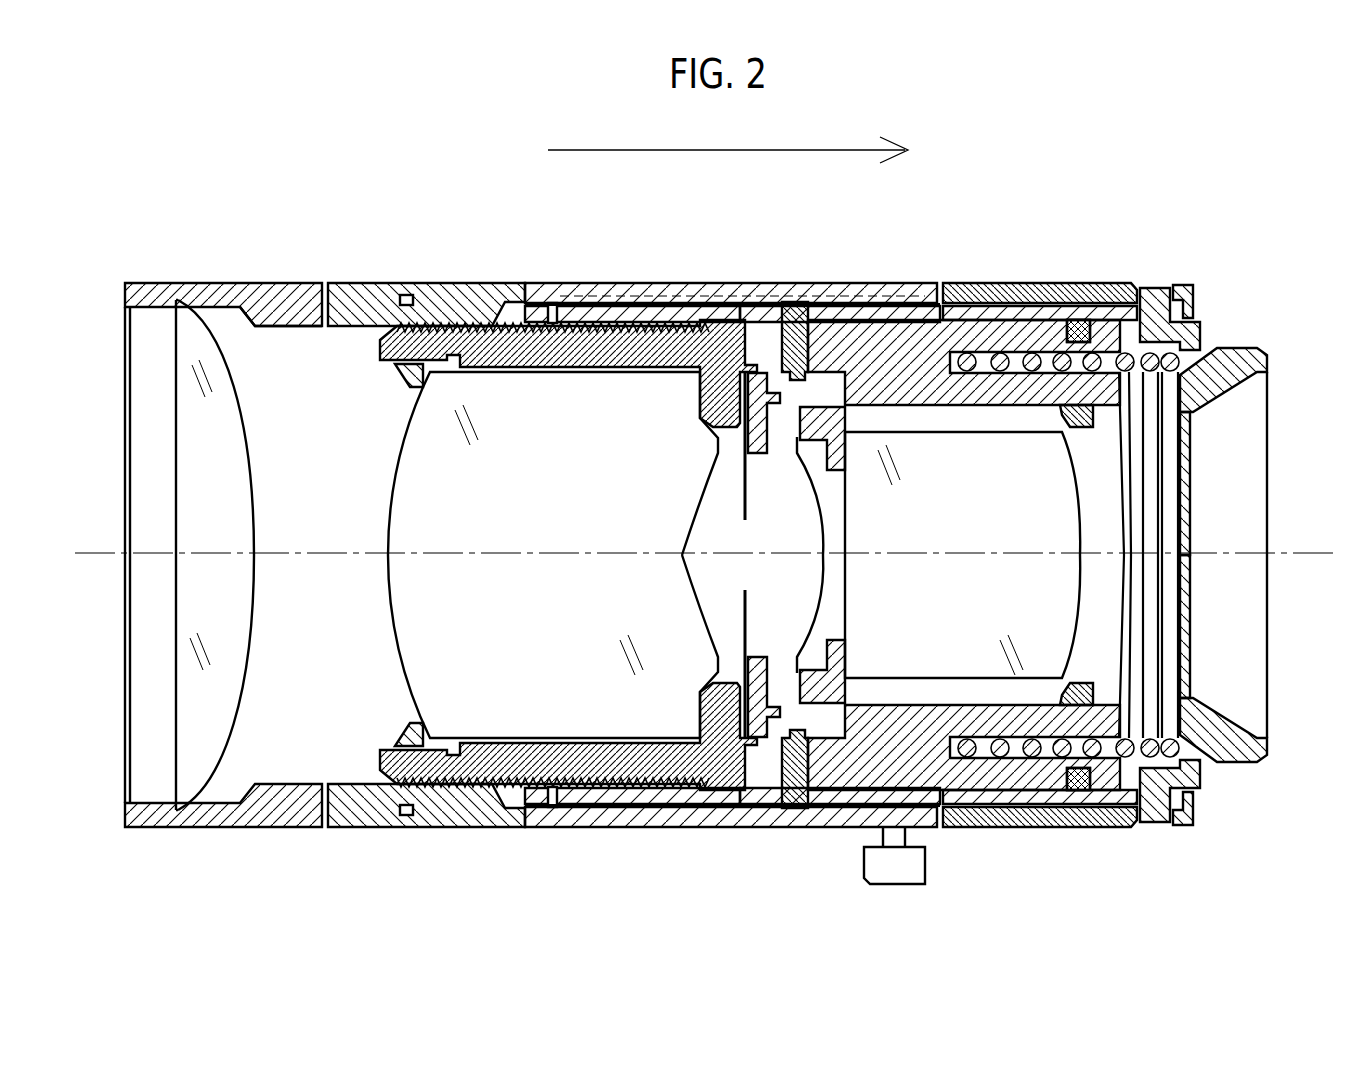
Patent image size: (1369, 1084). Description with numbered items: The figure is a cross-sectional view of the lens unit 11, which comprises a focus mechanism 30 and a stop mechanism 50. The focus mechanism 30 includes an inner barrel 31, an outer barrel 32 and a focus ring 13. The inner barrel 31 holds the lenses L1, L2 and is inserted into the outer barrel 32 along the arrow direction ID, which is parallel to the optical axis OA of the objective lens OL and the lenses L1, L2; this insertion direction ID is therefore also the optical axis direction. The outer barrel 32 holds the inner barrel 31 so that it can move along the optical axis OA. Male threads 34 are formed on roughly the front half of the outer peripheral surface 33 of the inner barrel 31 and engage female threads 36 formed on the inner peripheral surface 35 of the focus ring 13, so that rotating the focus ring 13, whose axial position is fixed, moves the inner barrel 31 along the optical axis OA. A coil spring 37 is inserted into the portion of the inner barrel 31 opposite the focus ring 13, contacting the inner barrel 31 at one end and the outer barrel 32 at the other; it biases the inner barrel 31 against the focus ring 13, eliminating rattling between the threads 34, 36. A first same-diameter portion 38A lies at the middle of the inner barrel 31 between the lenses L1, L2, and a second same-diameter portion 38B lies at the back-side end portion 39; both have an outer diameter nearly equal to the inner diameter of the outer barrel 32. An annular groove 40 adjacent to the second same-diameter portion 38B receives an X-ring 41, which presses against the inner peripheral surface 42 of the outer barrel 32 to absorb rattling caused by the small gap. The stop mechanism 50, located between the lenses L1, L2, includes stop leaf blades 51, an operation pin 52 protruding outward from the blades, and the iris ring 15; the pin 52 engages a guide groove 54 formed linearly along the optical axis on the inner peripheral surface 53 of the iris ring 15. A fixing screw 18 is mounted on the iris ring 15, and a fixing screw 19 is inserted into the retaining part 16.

The lens unit 11 is at (728, 552).
The focus ring 13 is at (228, 592).
The iris ring 15 is at (645, 303).
The retaining part 16 is at (1047, 283).
The fixing screw 18 is at (893, 884).
The fixing screw 19 is at (1143, 288).
The focus mechanism 30 is at (618, 594).
The inner barrel 31 is at (693, 773).
The outer barrel 32 is at (622, 800).
The outer peripheral surface 33 is at (923, 305).
The male threads 34 is at (518, 318).
The inner peripheral surface 35 is at (305, 328).
The female threads 36 is at (432, 300).
The coil spring 37 is at (1168, 478).
The first same-diameter portion 38A is at (760, 827).
The second same-diameter portion 38B is at (1127, 822).
The end portion 39 is at (1177, 802).
The annular groove 40 is at (1100, 302).
The X-ring 41 is at (1085, 795).
The inner peripheral surface 42 is at (993, 805).
The stop mechanism 50 is at (732, 489).
The stop leaf blades 51 is at (740, 335).
The operation pin 52 is at (795, 300).
The inner peripheral surface 53 is at (870, 305).
The guide groove 54 is at (580, 300).
The lens L1 is at (410, 427).
The lens L2 is at (833, 512).
The optical axis OA is at (342, 552).
The objective lens OL is at (220, 708).
The insertion direction ID is at (600, 140).